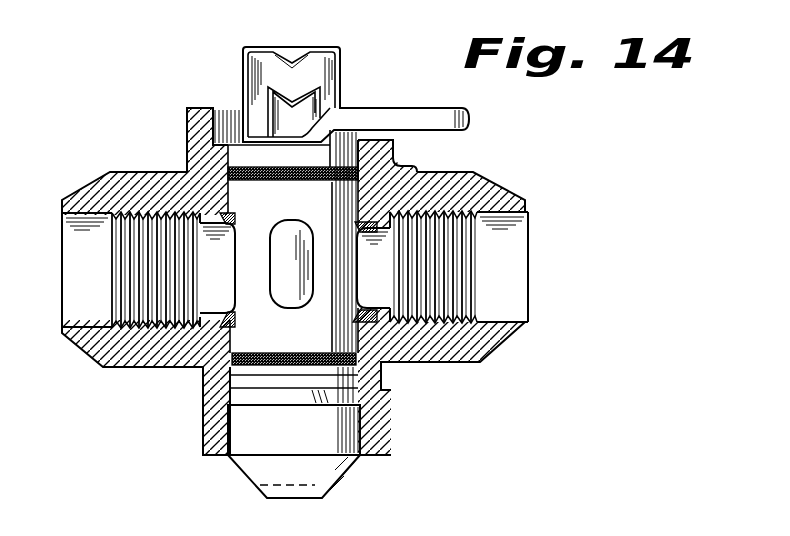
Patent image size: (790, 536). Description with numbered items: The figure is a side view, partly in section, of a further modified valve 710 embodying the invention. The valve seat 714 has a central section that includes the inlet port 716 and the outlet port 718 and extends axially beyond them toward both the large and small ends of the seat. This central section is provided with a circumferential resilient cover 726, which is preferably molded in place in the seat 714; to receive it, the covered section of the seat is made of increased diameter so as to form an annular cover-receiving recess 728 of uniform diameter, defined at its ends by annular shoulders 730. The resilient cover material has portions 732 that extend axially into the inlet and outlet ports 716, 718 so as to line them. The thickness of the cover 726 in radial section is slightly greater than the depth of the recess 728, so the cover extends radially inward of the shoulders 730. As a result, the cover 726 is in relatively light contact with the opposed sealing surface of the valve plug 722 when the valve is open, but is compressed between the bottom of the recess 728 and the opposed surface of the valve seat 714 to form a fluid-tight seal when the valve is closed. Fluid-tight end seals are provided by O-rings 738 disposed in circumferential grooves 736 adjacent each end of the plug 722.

The valve 710 is at (505, 139).
The valve seat 714 is at (382, 366).
The inlet port 716 is at (222, 252).
The outlet port 718 is at (396, 168).
The valve plug 722 is at (294, 432).
The circumferential resilient cover 726 is at (222, 307).
The annular cover-receiving recess 728 is at (220, 210).
The annular shoulders 730 is at (345, 213).
The cover portions 732 is at (373, 320).
The circumferential grooves 736 is at (190, 143).
The O-rings 738 is at (243, 170).